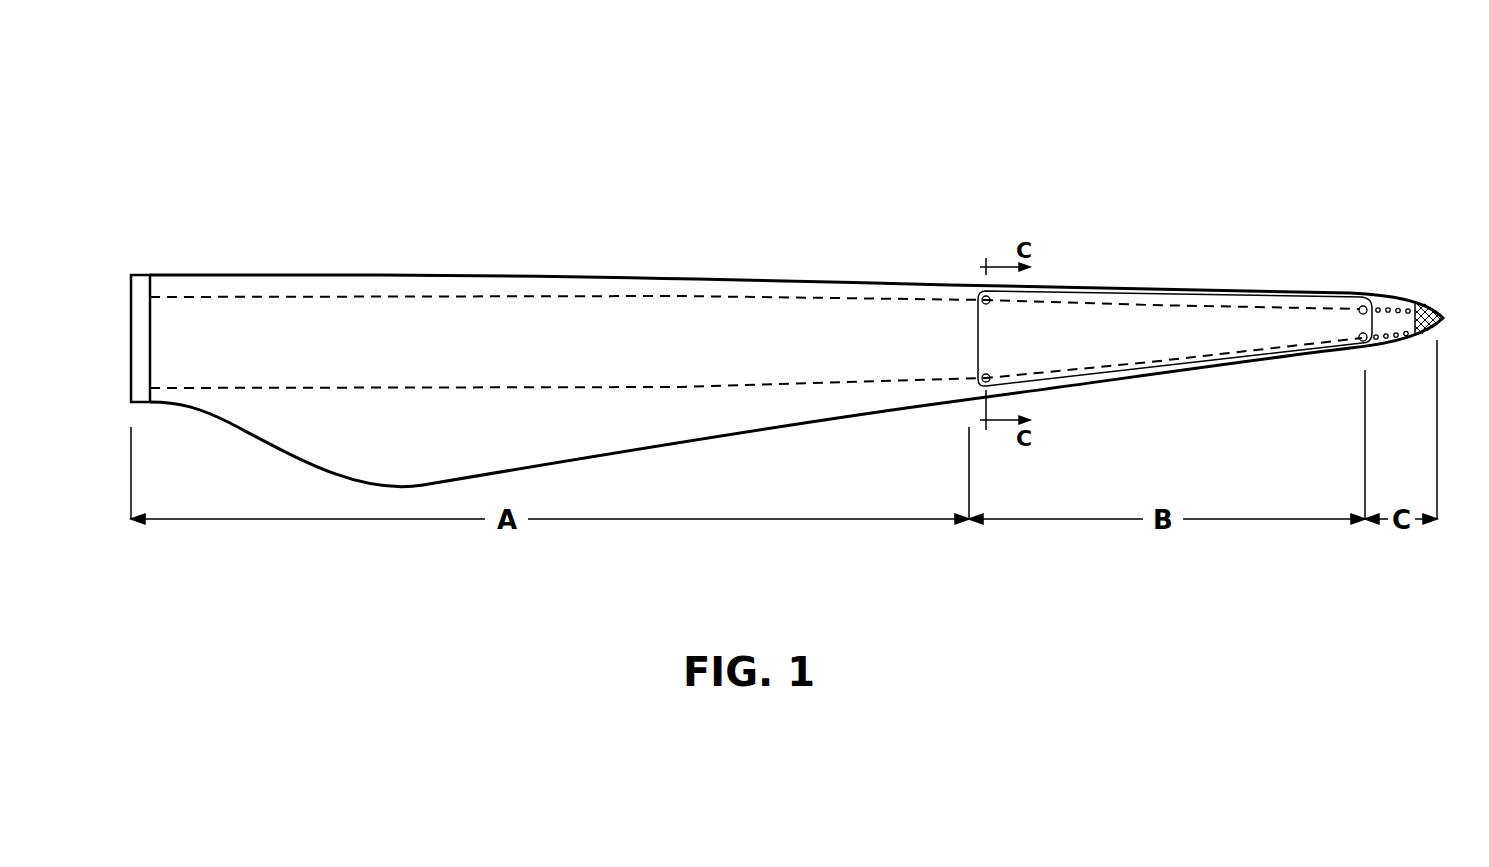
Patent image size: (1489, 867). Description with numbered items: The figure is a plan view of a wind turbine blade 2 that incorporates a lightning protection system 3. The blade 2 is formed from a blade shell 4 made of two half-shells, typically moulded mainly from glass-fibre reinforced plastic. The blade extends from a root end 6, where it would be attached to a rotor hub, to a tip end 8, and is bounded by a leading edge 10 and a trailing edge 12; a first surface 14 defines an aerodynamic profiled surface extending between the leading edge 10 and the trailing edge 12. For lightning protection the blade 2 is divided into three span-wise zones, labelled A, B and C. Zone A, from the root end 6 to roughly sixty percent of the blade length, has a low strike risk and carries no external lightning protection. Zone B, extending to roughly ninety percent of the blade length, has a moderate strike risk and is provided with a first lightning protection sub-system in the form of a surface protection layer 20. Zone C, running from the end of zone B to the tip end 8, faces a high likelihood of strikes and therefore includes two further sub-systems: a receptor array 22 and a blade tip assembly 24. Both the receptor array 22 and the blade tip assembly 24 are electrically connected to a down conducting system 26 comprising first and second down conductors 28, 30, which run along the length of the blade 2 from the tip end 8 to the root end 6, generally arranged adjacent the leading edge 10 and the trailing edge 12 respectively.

The wind turbine blade 2 is at (357, 121).
The lightning protection system 3 is at (1206, 590).
The blade shell 4 is at (214, 272).
The root end 6 is at (131, 287).
The tip end 8 is at (1437, 335).
The leading edge 10 is at (410, 275).
The trailing edge 12 is at (286, 452).
The first surface 14 is at (273, 410).
The surface protection layer 20 is at (1189, 259).
The receptor array 22 is at (1378, 291).
The blade tip assembly 24 is at (1436, 303).
The down conducting system 26 is at (850, 381).
The first down conductor 28 is at (756, 297).
The second down conductor 30 is at (790, 387).